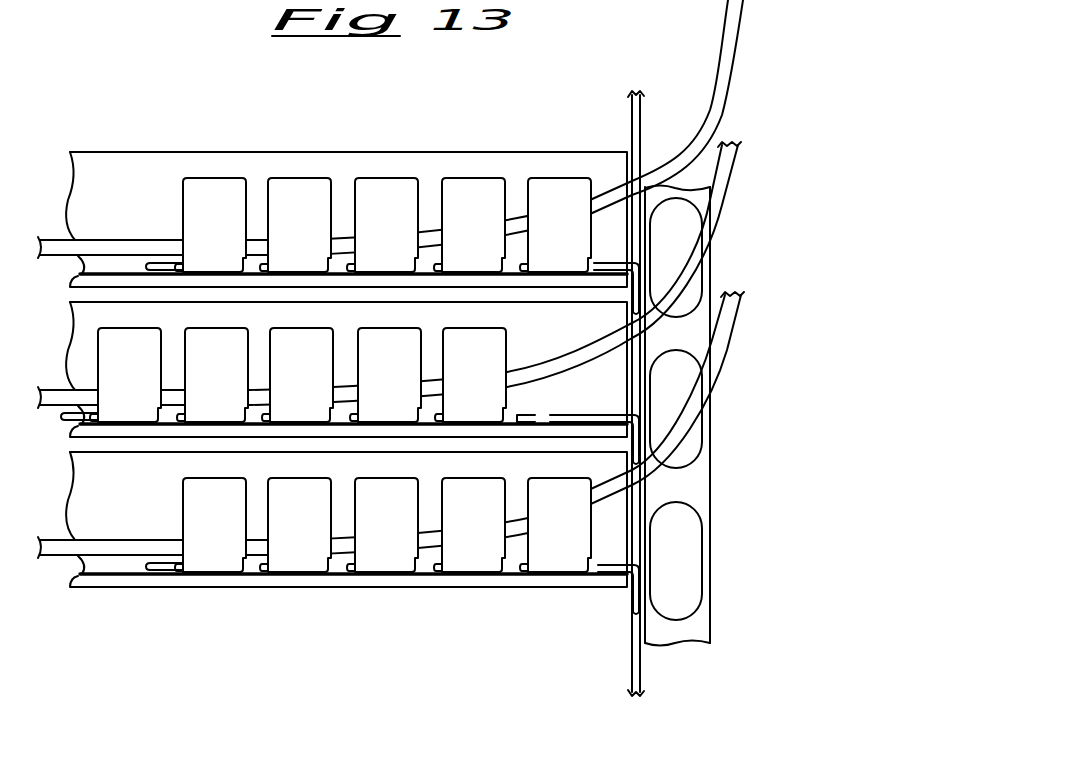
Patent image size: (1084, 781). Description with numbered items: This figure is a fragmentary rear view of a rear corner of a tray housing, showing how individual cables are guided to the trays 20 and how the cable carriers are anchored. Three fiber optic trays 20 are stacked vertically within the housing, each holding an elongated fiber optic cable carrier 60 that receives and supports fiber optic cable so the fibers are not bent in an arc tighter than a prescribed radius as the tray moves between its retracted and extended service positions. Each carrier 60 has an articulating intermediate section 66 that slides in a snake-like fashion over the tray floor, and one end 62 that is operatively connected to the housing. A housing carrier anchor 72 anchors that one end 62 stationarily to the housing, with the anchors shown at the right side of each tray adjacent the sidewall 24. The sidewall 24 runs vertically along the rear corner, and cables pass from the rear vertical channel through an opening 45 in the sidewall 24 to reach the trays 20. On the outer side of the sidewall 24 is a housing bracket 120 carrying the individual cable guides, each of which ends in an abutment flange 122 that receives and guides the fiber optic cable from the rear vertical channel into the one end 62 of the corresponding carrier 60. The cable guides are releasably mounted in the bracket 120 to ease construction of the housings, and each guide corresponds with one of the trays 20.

The fiber optic tray 20 is at (391, 326).
The fiber optic cable carrier 60 is at (305, 176).
The articulating intermediate section 66 is at (380, 186).
The one end of the carrier 62 is at (548, 186).
The housing carrier anchor 72 is at (641, 284).
The sidewall 24 is at (645, 660).
The housing bracket 120 is at (712, 490).
The abutment flange 122 is at (690, 222).
The opening 45 is at (704, 570).